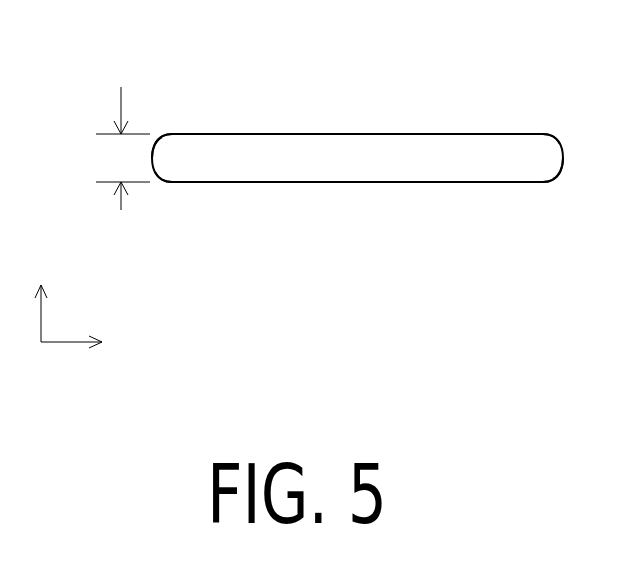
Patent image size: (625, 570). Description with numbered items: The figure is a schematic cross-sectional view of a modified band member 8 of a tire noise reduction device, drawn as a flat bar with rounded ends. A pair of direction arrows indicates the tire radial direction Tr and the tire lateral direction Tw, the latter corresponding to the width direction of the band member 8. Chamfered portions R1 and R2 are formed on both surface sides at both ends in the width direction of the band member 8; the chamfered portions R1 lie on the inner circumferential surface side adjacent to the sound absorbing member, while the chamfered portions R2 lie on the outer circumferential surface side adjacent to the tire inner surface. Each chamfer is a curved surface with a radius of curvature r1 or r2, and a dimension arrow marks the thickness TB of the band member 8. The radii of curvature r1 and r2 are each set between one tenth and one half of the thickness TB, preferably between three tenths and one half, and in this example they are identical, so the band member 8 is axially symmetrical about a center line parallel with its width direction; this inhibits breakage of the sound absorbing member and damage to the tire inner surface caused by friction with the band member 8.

The band member 8 is at (349, 158).
The chamfered portion R1 is at (162, 135).
The chamfered portion R2 is at (158, 183).
The radius of curvature r1 is at (163, 139).
The radius of curvature r2 is at (554, 177).
The thickness of the band member TB is at (108, 148).
The tire radial direction Tr is at (38, 296).
The tire lateral direction Tw is at (87, 344).